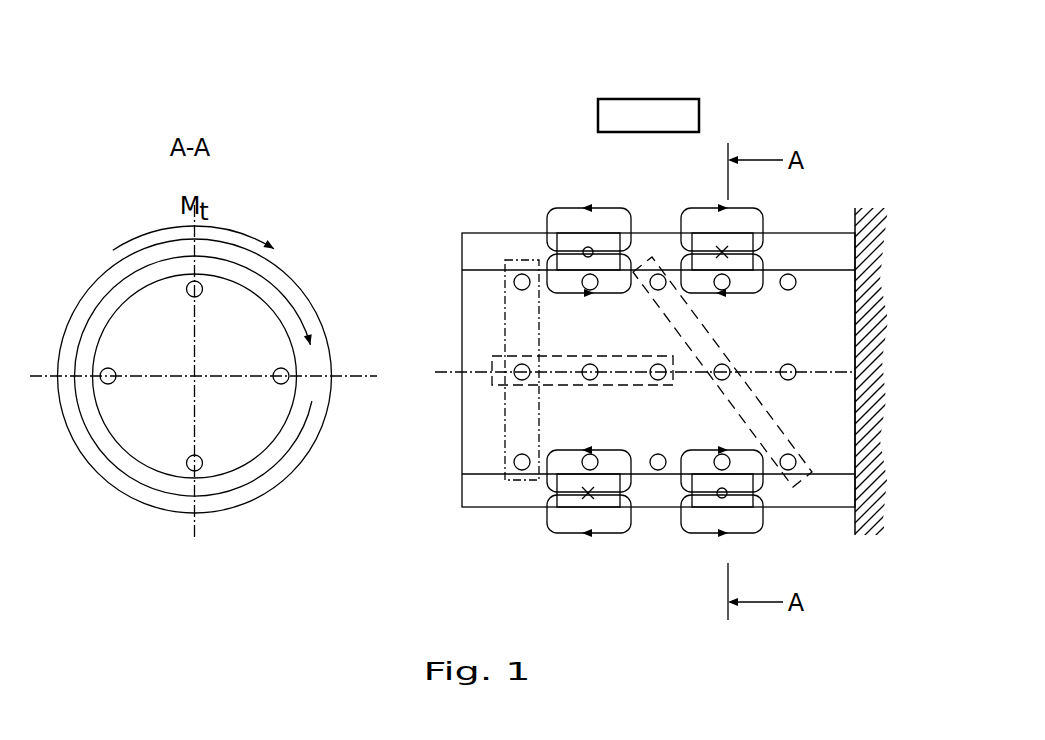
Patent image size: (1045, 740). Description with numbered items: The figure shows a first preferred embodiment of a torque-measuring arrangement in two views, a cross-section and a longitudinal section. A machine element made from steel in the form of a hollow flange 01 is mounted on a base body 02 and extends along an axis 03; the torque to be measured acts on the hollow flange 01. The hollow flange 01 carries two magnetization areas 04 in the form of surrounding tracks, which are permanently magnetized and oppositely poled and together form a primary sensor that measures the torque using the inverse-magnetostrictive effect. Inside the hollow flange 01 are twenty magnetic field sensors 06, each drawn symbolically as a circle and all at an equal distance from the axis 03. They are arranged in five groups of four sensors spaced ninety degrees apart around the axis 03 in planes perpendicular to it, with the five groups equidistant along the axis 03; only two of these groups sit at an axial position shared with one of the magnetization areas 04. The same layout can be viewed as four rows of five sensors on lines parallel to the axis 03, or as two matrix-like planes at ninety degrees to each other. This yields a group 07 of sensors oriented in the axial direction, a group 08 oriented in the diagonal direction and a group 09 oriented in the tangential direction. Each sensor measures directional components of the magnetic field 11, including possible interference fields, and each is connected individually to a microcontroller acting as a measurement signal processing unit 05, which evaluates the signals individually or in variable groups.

The hollow flange 01 is at (297, 295).
The base body 02 is at (882, 238).
The axis 03 is at (194, 377).
The magnetization areas 04 is at (103, 292).
The measurement signal processing unit 05 is at (681, 99).
The magnetic field sensors 06 is at (187, 290).
The group of magnetic field sensors oriented in the axial direction 07 is at (500, 357).
The group of magnetic field sensors oriented in the diagonal direction 08 is at (712, 347).
The group of magnetic field sensors oriented in the tangential direction 09 is at (505, 302).
The magnetic field 11 is at (628, 534).